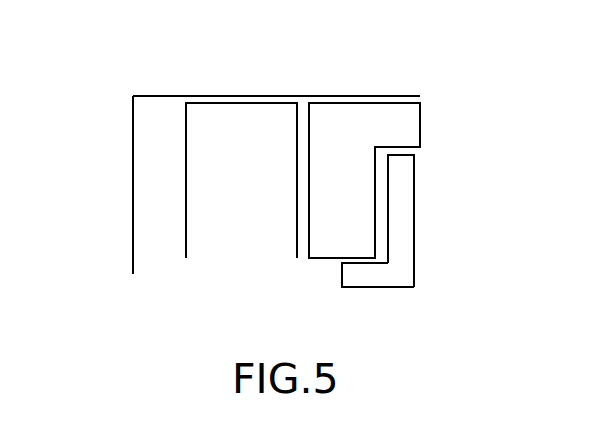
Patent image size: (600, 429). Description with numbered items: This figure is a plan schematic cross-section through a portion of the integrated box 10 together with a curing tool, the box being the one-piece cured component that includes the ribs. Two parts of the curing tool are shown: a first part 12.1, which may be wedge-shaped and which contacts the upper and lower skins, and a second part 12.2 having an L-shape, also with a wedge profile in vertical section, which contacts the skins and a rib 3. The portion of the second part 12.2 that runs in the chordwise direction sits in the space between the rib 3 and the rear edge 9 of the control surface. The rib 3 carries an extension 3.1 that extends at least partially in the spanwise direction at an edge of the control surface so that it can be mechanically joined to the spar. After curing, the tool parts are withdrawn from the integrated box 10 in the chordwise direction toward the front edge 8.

The rib 3 is at (402, 195).
The extension 3.1 is at (348, 271).
The front edge 8 is at (365, 245).
The rear edge 9 is at (280, 96).
The integrated box 10 is at (133, 213).
The first part 12.1 is at (239, 115).
The second part 12.2 is at (365, 117).